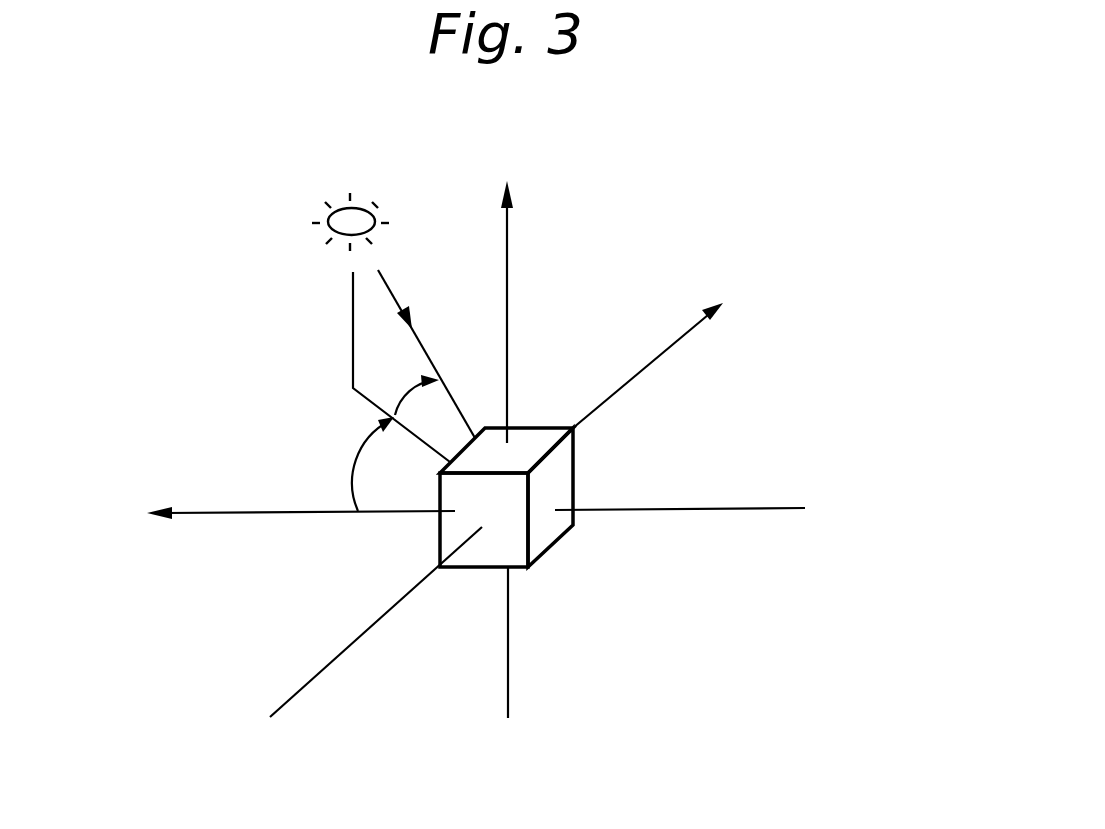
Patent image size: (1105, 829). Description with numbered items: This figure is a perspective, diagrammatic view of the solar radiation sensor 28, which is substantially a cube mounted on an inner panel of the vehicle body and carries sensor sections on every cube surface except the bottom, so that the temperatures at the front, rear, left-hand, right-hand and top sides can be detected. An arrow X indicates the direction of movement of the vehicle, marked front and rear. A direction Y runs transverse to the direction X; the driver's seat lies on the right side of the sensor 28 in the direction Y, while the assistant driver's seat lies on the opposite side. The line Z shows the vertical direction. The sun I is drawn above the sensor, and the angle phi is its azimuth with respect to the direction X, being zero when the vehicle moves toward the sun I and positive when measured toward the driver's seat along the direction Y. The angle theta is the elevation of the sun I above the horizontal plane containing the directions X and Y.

The solar radiation sensor 28 is at (547, 427).
The direction of movement of the vehicle X is at (480, 531).
The transverse direction Y is at (576, 515).
The vertical direction line Z is at (550, 430).
The sun I is at (383, 335).